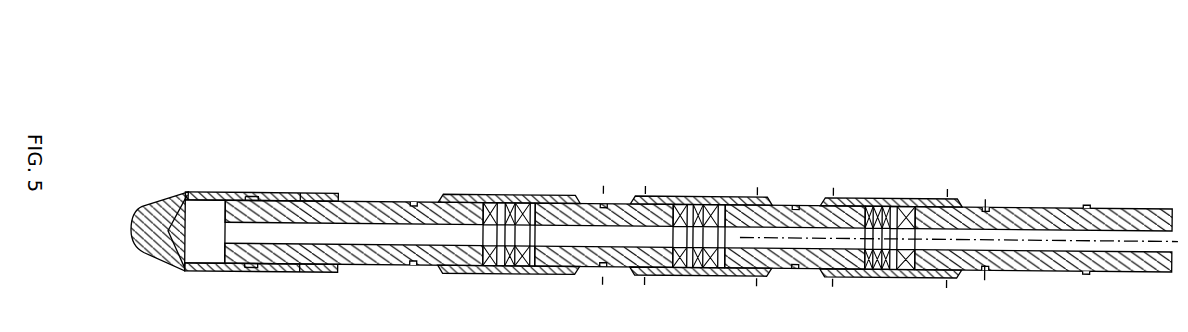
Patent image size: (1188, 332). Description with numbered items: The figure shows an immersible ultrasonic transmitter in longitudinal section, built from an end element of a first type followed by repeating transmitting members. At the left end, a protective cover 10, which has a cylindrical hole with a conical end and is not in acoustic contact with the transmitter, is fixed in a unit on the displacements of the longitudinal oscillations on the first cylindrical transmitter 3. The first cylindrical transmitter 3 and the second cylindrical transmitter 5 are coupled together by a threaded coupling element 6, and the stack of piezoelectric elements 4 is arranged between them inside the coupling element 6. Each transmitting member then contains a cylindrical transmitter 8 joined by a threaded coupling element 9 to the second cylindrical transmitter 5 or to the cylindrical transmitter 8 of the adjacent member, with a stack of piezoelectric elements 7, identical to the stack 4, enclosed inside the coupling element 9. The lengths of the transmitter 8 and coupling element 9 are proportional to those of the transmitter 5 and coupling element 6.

The first cylindrical transmitter 3 is at (397, 210).
The stack of piezoelectric elements 4 is at (505, 207).
The second cylindrical transmitter 5 is at (592, 208).
The coupling element 6 is at (458, 195).
The stack of piezoelectric elements 7 is at (700, 205).
The cylindrical transmitter 8 is at (783, 212).
The coupling element 9 is at (665, 193).
The protective cover 10 is at (213, 195).